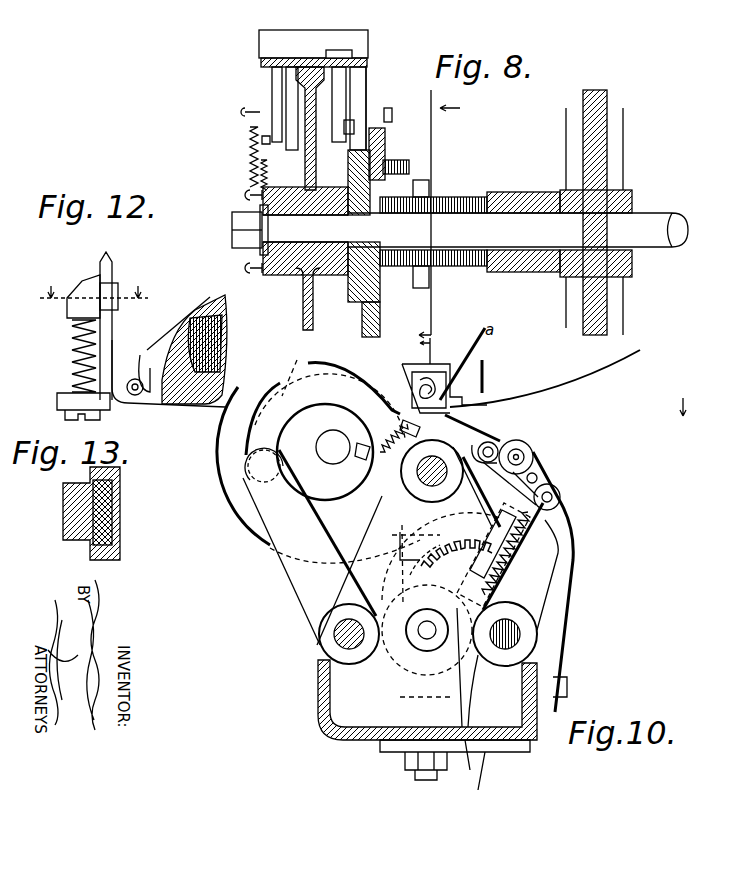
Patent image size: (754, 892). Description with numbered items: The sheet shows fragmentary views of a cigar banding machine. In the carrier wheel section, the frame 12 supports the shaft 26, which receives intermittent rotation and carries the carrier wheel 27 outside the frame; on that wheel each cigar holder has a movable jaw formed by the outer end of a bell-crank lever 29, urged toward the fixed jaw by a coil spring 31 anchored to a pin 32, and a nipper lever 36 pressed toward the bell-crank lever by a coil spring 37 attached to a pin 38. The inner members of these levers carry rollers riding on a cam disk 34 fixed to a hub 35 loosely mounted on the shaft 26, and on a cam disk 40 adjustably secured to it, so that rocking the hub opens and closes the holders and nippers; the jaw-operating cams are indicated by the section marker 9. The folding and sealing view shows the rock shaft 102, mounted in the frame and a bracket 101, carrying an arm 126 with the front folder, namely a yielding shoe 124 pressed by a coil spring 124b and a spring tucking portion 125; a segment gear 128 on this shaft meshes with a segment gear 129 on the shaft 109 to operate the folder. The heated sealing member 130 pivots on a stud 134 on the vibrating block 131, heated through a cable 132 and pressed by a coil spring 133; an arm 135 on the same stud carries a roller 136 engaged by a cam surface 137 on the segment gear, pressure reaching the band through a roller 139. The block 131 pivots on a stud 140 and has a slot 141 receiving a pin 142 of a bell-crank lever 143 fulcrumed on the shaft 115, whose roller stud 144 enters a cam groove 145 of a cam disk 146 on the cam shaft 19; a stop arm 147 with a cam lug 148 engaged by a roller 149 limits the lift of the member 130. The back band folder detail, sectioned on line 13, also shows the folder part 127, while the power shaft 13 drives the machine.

In FIG. 8, the bell-crank lever 29 is at (366, 85).
In FIG. 8, the axis line 9 is at (424, 208).
In FIG. 10, the axis line 9 is at (455, 369).
In FIG. 8, the nipper lever 36 is at (366, 102).
In FIG. 8, the roller 139 is at (392, 116).
In FIG. 10, the roller 139 is at (467, 406).
In FIG. 8, the cam disk 34 is at (386, 143).
In FIG. 8, the hub 35 is at (405, 168).
In FIG. 8, the pin 32 is at (245, 113).
In FIG. 8, the coil spring 31 is at (262, 140).
In FIG. 8, the pin 38 is at (250, 150).
In FIG. 8, the coil spring 37 is at (260, 173).
In FIG. 8, the carrier wheel 27 is at (303, 296).
In FIG. 8, the cam disk 40 is at (348, 305).
In FIG. 8, the frame 12 is at (600, 142).
In FIG. 8, the shaft 26 is at (640, 222).
In FIG. 12, the spring tucking portion 125 is at (112, 272).
In FIG. 13, the spring tucking portion 125 is at (108, 528).
In FIG. 10, the spring tucking portion 125 is at (441, 375).
In FIG. 12, the shoe 124 is at (100, 272).
In FIG. 10, the shoe 124 is at (303, 413).
In FIG. 12, the power shaft 13 is at (90, 296).
In FIG. 12, the coil spring 124b is at (80, 354).
In FIG. 10, the coil spring 124b is at (381, 436).
In FIG. 12, the arm 126 is at (173, 407).
In FIG. 10, the arm 126 is at (366, 483).
In FIG. 12, the shaft 102 is at (224, 344).
In FIG. 10, the shaft 102 is at (390, 491).
In FIG. 13, the block 127 is at (120, 496).
In FIG. 10, the bracket 101 is at (318, 700).
In FIG. 10, the cam groove 145 is at (243, 438).
In FIG. 10, the cam disk 146 is at (228, 480).
In FIG. 10, the roller stud 144 is at (252, 475).
In FIG. 10, the bell-crank lever 143 is at (303, 578).
In FIG. 10, the shaft 115 is at (335, 638).
In FIG. 10, the stud 140 is at (420, 633).
In FIG. 10, the shaft 109 is at (521, 634).
In FIG. 10, the segment gear 128 is at (446, 530).
In FIG. 10, the pivot stud 134 is at (533, 450).
In FIG. 10, the roller 136 is at (496, 443).
In FIG. 10, the roller 149 is at (553, 488).
In FIG. 10, the vibrating block 131 is at (568, 506).
In FIG. 10, the cam shaft 19 is at (325, 450).
In FIG. 10, the sealing member 130 is at (450, 420).
In FIG. 10, the cam surface 137 is at (518, 441).
In FIG. 10, the arm 135 is at (665, 412).
In FIG. 10, the cam lug 148 is at (567, 503).
In FIG. 10, the stop arm 147 is at (574, 562).
In FIG. 10, the coil spring 133 is at (548, 535).
In FIG. 10, the segment gear 129 is at (521, 524).
In FIG. 10, the pin or roller stud 142 is at (428, 565).
In FIG. 10, the slot 141 is at (408, 541).
In FIG. 10, the cable 132 is at (473, 683).